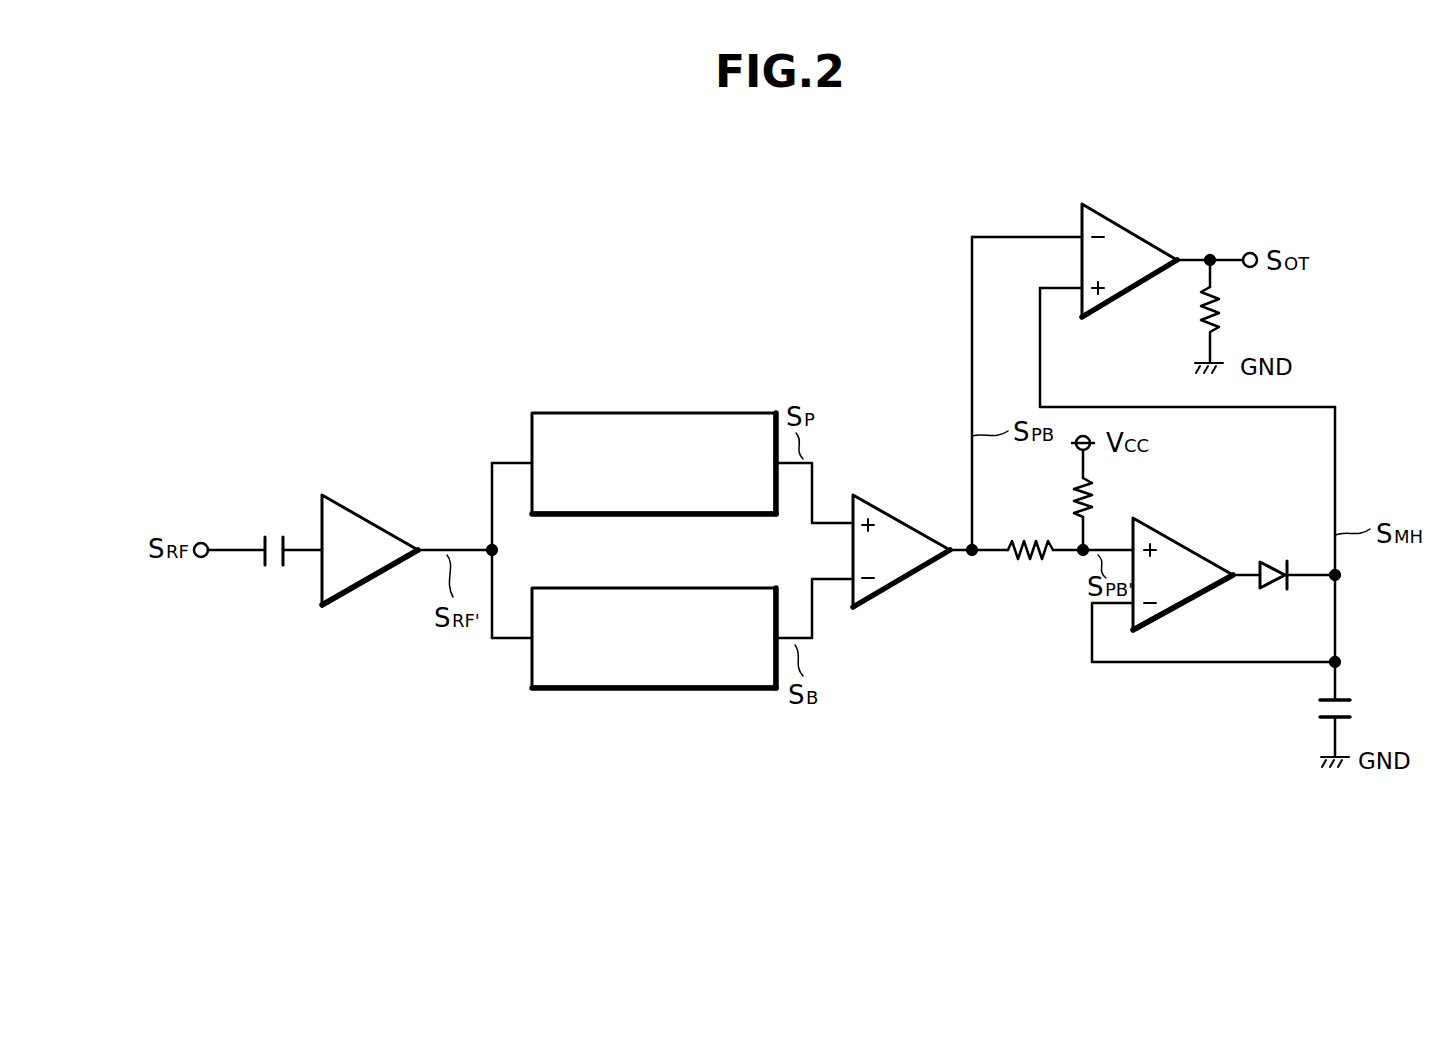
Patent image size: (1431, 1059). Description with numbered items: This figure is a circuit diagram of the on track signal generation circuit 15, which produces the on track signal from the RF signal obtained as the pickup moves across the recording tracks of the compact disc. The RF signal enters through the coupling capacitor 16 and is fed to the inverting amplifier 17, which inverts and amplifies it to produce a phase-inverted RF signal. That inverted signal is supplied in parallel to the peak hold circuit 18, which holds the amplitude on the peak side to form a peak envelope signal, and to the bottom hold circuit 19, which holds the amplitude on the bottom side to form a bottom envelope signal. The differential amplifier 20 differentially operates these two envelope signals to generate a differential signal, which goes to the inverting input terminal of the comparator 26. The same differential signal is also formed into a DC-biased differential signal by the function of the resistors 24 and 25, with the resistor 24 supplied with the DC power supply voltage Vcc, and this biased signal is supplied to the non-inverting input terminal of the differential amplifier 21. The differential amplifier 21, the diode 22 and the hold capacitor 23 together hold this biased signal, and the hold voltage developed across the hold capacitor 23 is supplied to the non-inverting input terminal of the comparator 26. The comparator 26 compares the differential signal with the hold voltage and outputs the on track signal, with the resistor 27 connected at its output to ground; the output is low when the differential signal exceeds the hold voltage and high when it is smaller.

The on track signal generation circuit 15 is at (734, 296).
The coupling capacitor 16 is at (278, 530).
The inverting amplifier 17 is at (388, 528).
The peak hold circuit 18 is at (689, 413).
The bottom hold circuit 19 is at (689, 588).
The differential amplifier 20 is at (912, 528).
The differential amplifier 21 is at (1210, 556).
The diode 22 is at (1272, 560).
The hold capacitor 23 is at (1343, 711).
The resistor 24 is at (1092, 497).
The resistor 25 is at (1026, 540).
The comparator 26 is at (1150, 242).
The resistor 27 is at (1218, 306).